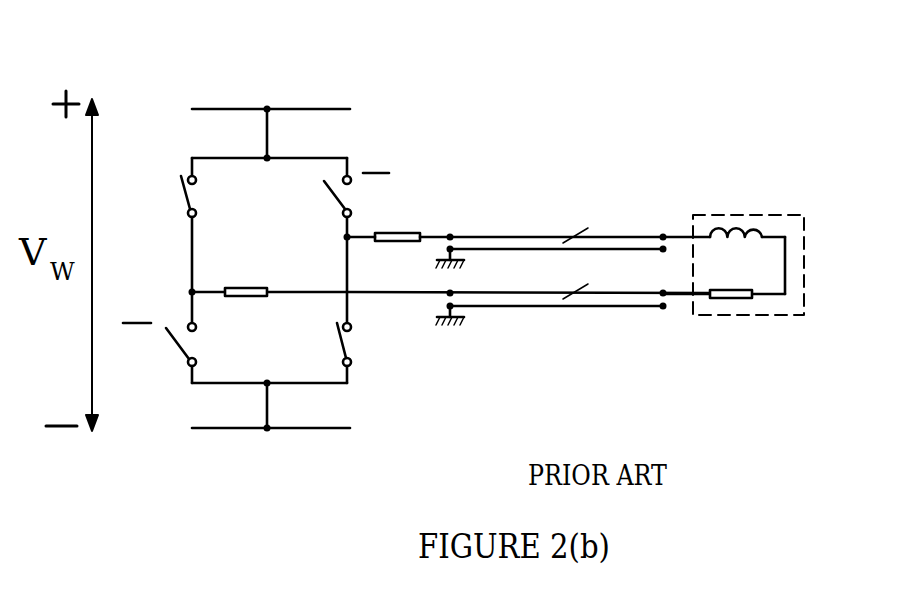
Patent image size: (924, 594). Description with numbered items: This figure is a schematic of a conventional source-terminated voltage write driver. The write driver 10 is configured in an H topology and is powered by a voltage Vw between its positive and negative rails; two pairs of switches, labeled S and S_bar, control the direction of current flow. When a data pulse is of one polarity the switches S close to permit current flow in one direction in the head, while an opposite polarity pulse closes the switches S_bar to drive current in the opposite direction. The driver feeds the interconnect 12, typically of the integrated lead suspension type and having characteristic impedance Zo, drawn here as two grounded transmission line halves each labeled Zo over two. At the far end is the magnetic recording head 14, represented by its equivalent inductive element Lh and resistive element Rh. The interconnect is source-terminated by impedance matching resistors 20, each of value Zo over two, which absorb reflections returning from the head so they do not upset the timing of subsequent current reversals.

The write driver 10 is at (379, 140).
The interconnect 12 is at (530, 198).
The magnetic recording head 14 is at (734, 204).
The impedance matching resistors 20 is at (236, 276).